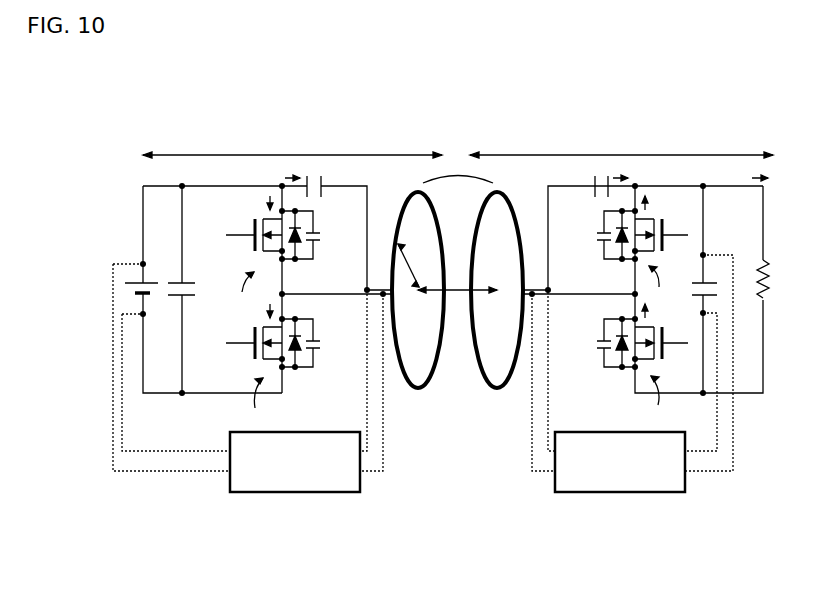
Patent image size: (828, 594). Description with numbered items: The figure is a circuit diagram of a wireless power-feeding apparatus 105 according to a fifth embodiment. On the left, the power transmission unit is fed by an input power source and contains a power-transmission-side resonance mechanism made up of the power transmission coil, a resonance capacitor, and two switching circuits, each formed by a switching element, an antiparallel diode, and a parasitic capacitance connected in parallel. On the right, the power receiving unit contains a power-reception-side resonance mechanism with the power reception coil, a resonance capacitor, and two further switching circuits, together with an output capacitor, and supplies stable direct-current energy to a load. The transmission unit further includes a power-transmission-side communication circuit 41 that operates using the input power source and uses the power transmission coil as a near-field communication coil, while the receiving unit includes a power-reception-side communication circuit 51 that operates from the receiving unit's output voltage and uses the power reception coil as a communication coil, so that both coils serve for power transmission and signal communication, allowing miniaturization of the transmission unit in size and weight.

The wireless power-feeding apparatus 105 is at (774, 93).
The power-transmission-side communication circuit 41 is at (293, 492).
The power-reception-side communication circuit 51 is at (622, 492).